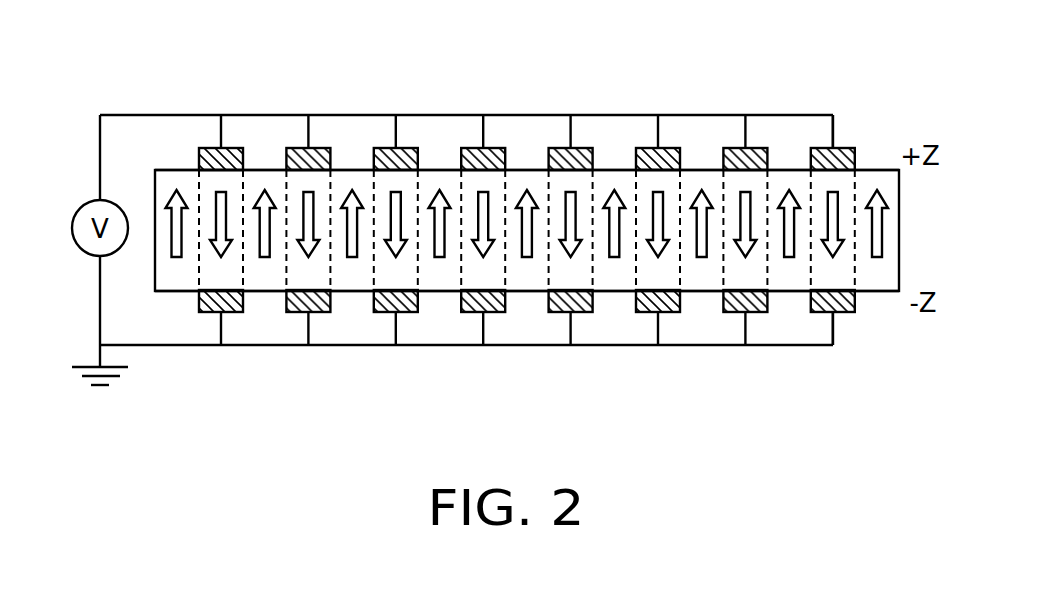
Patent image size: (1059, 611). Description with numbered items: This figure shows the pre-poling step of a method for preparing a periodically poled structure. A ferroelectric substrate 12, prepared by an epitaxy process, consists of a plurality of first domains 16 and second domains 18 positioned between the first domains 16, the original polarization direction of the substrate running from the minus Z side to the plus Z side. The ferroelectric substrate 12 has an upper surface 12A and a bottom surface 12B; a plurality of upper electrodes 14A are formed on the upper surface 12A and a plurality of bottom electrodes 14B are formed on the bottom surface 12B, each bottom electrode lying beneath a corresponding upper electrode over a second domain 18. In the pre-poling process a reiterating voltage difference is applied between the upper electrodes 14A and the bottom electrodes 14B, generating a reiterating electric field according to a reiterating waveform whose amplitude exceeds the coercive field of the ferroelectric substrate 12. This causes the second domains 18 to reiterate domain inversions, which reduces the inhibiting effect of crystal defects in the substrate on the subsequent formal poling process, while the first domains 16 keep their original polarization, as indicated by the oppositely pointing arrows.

The ferroelectric substrate 12 is at (890, 228).
The upper surface 12A is at (887, 168).
The bottom surface 12B is at (888, 293).
The upper electrodes 14A is at (846, 150).
The bottom electrodes 14B is at (846, 313).
The first domains 16 is at (173, 282).
The second domains 18 is at (232, 277).